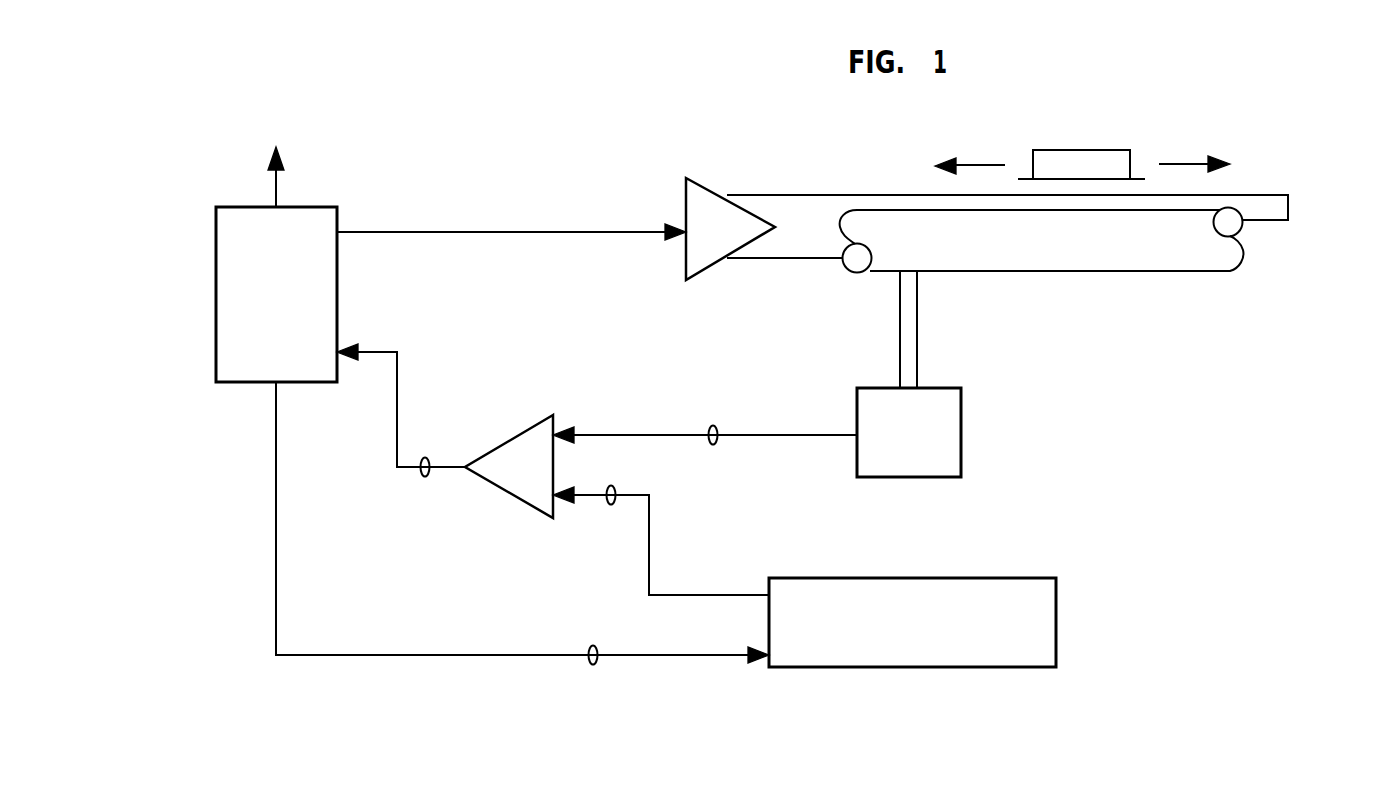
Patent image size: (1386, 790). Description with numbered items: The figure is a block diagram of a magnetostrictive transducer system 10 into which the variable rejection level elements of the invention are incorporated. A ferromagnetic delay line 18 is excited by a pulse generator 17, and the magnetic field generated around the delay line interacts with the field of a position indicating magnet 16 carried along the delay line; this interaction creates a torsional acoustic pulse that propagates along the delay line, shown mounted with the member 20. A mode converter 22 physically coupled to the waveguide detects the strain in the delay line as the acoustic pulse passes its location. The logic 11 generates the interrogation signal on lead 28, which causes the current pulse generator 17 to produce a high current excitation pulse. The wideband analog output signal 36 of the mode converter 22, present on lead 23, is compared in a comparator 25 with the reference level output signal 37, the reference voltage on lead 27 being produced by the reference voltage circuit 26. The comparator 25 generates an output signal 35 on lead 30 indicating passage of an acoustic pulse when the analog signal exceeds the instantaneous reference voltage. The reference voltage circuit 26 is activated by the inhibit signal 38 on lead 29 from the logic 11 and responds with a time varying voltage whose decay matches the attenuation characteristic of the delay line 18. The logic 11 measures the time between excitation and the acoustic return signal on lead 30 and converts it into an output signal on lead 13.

The magnetostrictive transducer system 10 is at (602, 167).
The logic 11 is at (216, 264).
The output lead 13 is at (278, 191).
The position indicating magnet 16 is at (1080, 150).
The pulse generator 17 is at (712, 190).
The ferromagnetic delay line 18 is at (1068, 255).
The transport bar / track 20 is at (1257, 193).
The mode converter 22 is at (962, 425).
The lead 23 is at (715, 425).
The comparator 25 is at (505, 442).
The reference voltage circuit 26 is at (895, 668).
The lead 27 is at (612, 485).
The lead 28 is at (498, 232).
The lead 29 is at (593, 665).
The lead 30 is at (426, 456).
The output signal 35 is at (373, 350).
The wideband analog output signal 36 is at (817, 436).
The reference level output signal 37 is at (717, 593).
The inhibit signal 38 is at (276, 447).